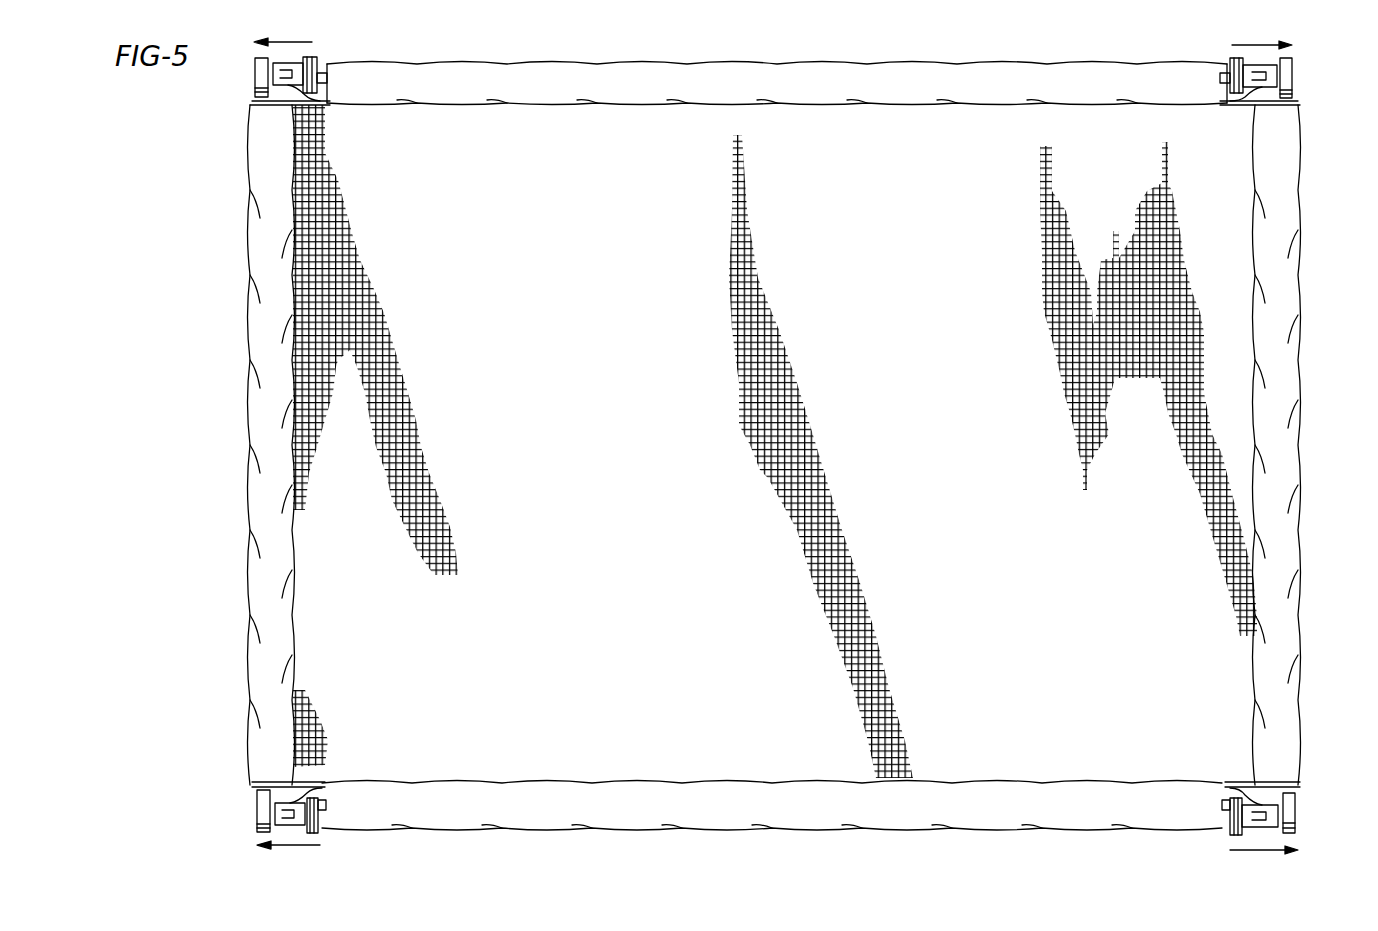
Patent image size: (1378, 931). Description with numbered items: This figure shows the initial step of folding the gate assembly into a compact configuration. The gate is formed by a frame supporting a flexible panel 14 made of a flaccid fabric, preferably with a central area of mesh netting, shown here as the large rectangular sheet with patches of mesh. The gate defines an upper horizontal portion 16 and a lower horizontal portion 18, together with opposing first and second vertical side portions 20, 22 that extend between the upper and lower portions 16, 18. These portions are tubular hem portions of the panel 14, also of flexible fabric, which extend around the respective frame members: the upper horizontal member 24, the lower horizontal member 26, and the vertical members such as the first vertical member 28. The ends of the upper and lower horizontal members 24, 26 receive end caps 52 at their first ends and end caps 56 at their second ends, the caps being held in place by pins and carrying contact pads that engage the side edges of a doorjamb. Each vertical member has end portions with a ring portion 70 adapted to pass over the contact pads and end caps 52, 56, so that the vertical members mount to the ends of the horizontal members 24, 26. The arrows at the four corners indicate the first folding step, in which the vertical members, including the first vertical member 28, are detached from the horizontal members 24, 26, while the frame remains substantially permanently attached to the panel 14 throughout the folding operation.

The flexible panel 14 is at (750, 132).
The upper horizontal portion 16 is at (797, 93).
The lower horizontal portion 18 is at (708, 790).
The first vertical side portion 20 is at (265, 273).
The second vertical side portion 22 is at (1260, 180).
The upper horizontal member 24 is at (1225, 80).
The lower horizontal member 26 is at (327, 802).
The first vertical member 28 is at (250, 95).
The end caps 52 is at (312, 102).
The end caps 56 is at (1263, 88).
The ring portion 70 is at (257, 73).